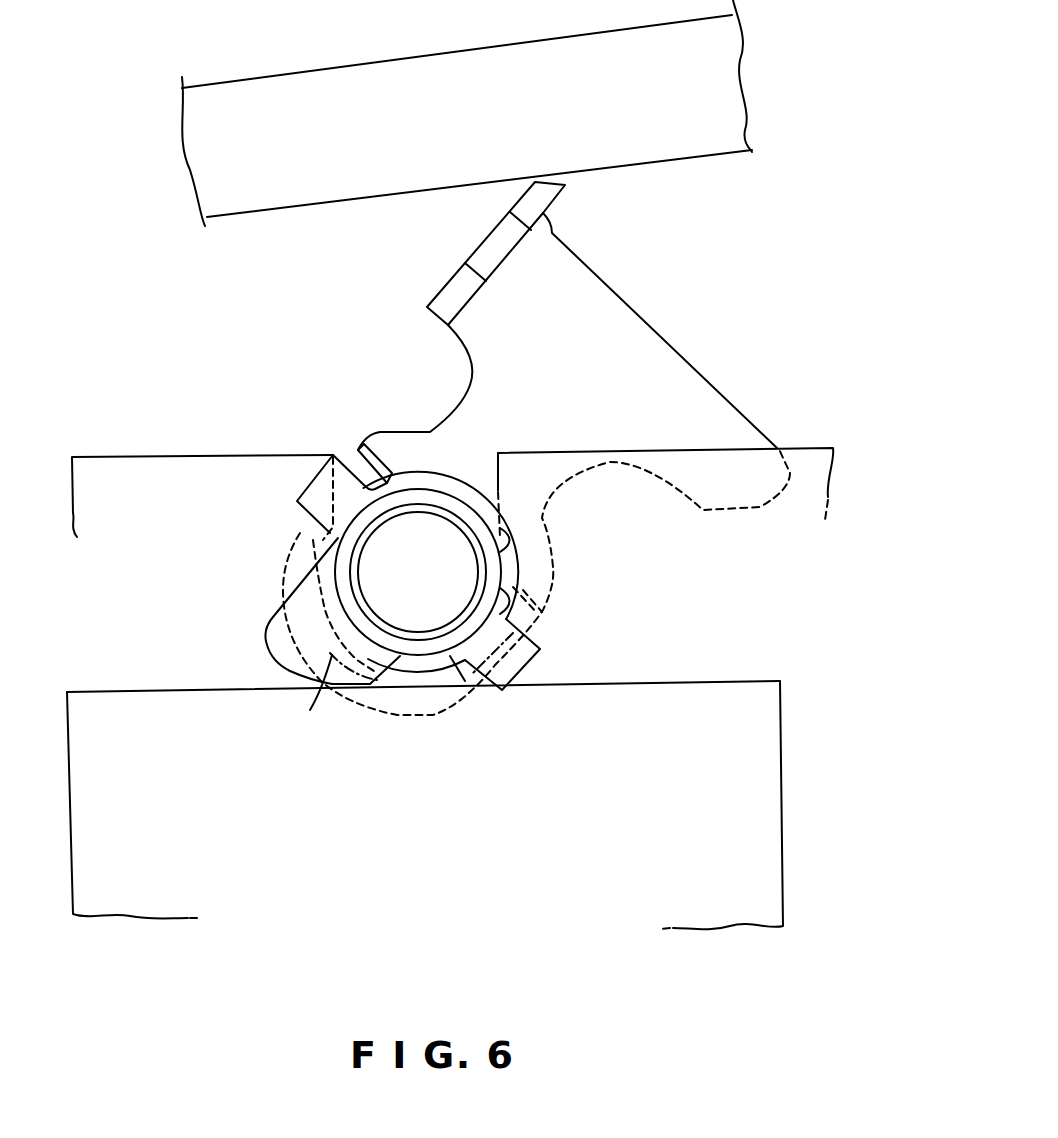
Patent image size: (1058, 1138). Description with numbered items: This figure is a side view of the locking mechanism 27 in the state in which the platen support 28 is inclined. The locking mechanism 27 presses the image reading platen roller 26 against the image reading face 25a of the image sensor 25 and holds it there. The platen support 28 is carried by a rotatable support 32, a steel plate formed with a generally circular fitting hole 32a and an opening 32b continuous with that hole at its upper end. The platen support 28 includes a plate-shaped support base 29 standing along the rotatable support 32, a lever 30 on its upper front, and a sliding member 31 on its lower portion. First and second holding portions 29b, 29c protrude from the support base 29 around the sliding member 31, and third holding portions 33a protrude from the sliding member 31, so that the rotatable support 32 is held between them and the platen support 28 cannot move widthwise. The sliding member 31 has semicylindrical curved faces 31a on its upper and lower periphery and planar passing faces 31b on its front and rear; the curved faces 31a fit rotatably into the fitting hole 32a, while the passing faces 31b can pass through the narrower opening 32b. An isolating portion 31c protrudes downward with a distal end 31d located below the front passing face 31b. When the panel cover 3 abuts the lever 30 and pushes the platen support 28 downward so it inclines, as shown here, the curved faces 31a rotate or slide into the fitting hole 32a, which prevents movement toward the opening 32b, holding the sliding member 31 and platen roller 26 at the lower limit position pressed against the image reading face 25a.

The panel cover 3 is at (740, 92).
The image sensor 25 is at (765, 762).
The image reading face 25a is at (745, 683).
The image reading platen roller 26 is at (310, 710).
The locking mechanism 27 is at (793, 387).
The platen support 28 is at (705, 380).
The support base 29 is at (623, 323).
The first holding portion 29b is at (390, 442).
The second holding portion 29c is at (402, 703).
The lever 30 is at (443, 295).
The sliding member 31 is at (500, 577).
The curved face 31a is at (480, 498).
The passing face 31b is at (473, 683).
The isolating portion 31c is at (277, 620).
The distal end 31d is at (272, 660).
The rotatable support 32 is at (152, 455).
The fitting hole 32a is at (510, 548).
The opening 32b is at (497, 477).
The third holding portion 33a is at (305, 488).